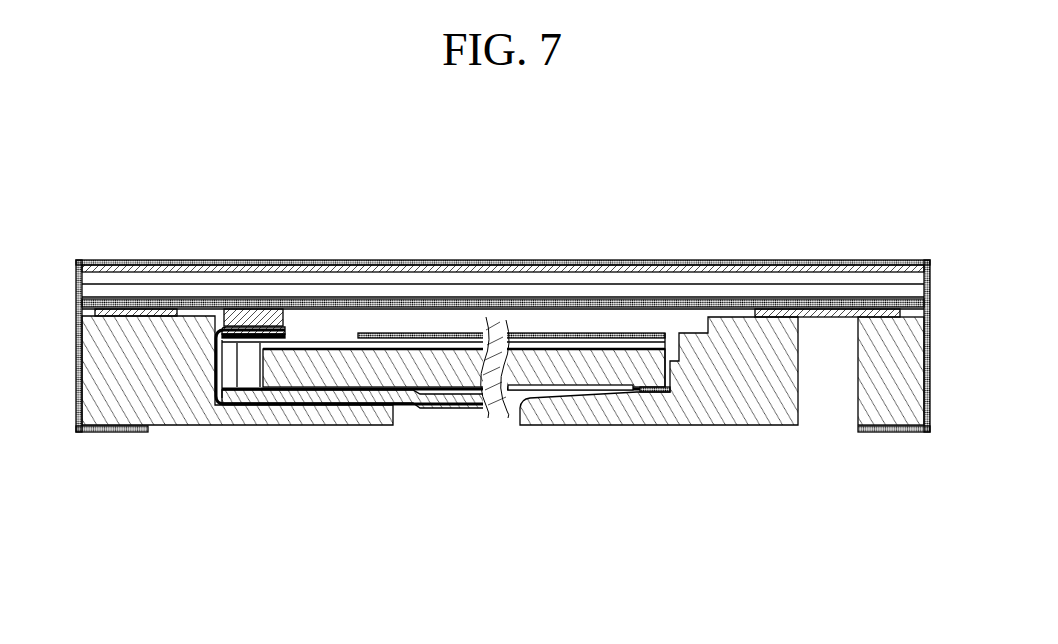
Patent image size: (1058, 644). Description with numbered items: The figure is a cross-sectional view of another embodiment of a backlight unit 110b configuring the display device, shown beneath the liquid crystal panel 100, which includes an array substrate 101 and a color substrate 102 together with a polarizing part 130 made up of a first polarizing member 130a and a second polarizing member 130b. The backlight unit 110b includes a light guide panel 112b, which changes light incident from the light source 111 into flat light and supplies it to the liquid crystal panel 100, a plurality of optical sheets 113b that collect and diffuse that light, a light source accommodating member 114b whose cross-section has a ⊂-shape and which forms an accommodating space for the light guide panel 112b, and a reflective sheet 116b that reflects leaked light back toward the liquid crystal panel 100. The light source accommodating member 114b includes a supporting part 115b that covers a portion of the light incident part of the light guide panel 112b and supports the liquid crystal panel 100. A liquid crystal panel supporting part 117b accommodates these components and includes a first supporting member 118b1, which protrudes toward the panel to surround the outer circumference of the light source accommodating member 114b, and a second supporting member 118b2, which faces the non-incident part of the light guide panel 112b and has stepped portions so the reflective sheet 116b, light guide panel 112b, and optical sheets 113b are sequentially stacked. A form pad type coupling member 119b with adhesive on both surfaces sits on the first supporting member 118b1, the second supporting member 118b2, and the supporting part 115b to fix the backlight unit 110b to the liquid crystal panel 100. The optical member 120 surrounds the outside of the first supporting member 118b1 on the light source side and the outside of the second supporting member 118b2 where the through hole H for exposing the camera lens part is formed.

The liquid crystal panel 100 is at (457, 197).
The array substrate 101 is at (393, 295).
The color substrate 102 is at (448, 277).
The polarizing part 130 is at (583, 213).
The first polarizing member 130a is at (582, 303).
The second polarizing member 130b is at (645, 273).
The coupling member 119b is at (145, 310).
The supporting part 115b is at (253, 332).
The optical member 120 is at (90, 431).
The first supporting member 118b1 is at (163, 404).
The second supporting member 118b2 is at (732, 405).
The liquid crystal panel supporting part 117b is at (733, 497).
The light source 111 is at (250, 373).
The light source accommodating member 114b is at (308, 398).
The light guide panel 112b is at (440, 376).
The optical sheets 113b is at (553, 338).
The reflective sheet 116b is at (613, 389).
The through hole H is at (827, 403).
The backlight unit 110b is at (347, 541).